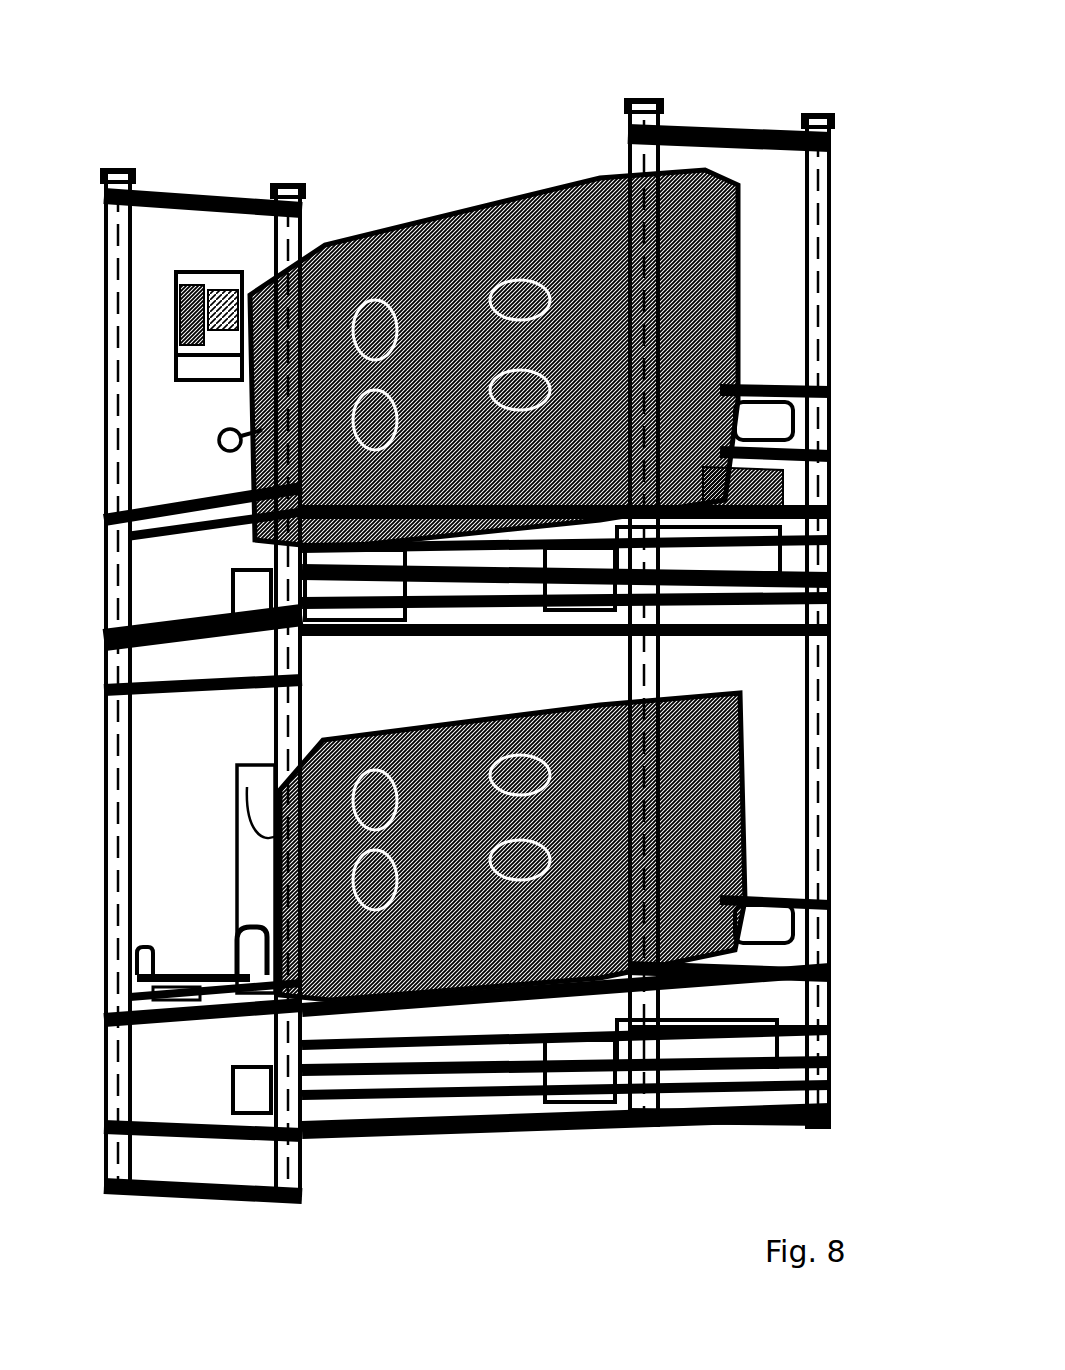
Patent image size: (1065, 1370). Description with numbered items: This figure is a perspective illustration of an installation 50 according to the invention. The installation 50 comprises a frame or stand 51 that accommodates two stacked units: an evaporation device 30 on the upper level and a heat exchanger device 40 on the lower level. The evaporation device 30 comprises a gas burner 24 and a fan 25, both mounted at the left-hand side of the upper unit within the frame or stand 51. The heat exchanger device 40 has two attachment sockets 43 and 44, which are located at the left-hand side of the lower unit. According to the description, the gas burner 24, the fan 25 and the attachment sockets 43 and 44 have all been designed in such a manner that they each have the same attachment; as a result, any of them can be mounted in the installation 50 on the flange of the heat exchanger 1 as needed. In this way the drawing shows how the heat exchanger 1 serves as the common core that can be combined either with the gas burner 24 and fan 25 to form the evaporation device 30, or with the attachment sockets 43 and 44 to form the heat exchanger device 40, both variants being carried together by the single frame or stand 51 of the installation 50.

The installation 50 is at (325, 175).
The frame or stand 51 is at (717, 132).
The heat exchanger 1 is at (483, 192).
The evaporation device 30 is at (735, 302).
The heat exchanger device 40 is at (738, 782).
The gas burner 24 is at (183, 335).
The fan 25 is at (225, 447).
The attachment socket 43 is at (247, 787).
The attachment socket 44 is at (258, 1010).